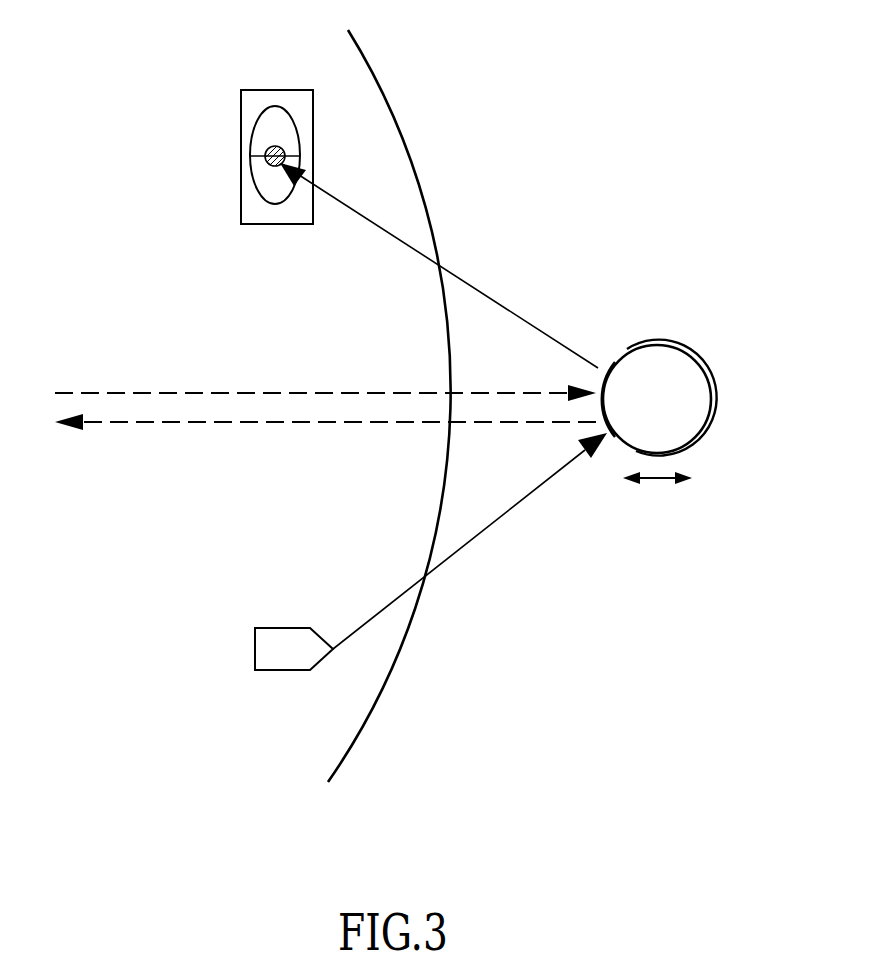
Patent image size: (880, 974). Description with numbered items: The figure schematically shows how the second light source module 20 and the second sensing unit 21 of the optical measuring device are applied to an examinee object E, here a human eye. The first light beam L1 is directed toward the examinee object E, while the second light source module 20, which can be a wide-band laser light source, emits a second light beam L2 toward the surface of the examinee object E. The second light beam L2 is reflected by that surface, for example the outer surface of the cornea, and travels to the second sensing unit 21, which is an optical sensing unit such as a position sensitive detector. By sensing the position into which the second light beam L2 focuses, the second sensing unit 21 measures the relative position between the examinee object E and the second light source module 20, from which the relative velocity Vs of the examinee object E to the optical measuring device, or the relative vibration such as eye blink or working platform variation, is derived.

The second light source module 20 is at (275, 628).
The second sensing unit 21 is at (260, 90).
The examinee object E is at (663, 343).
The first light beam L1 is at (326, 394).
The second light beam L2 is at (470, 541).
The relative velocity Vs is at (657, 497).